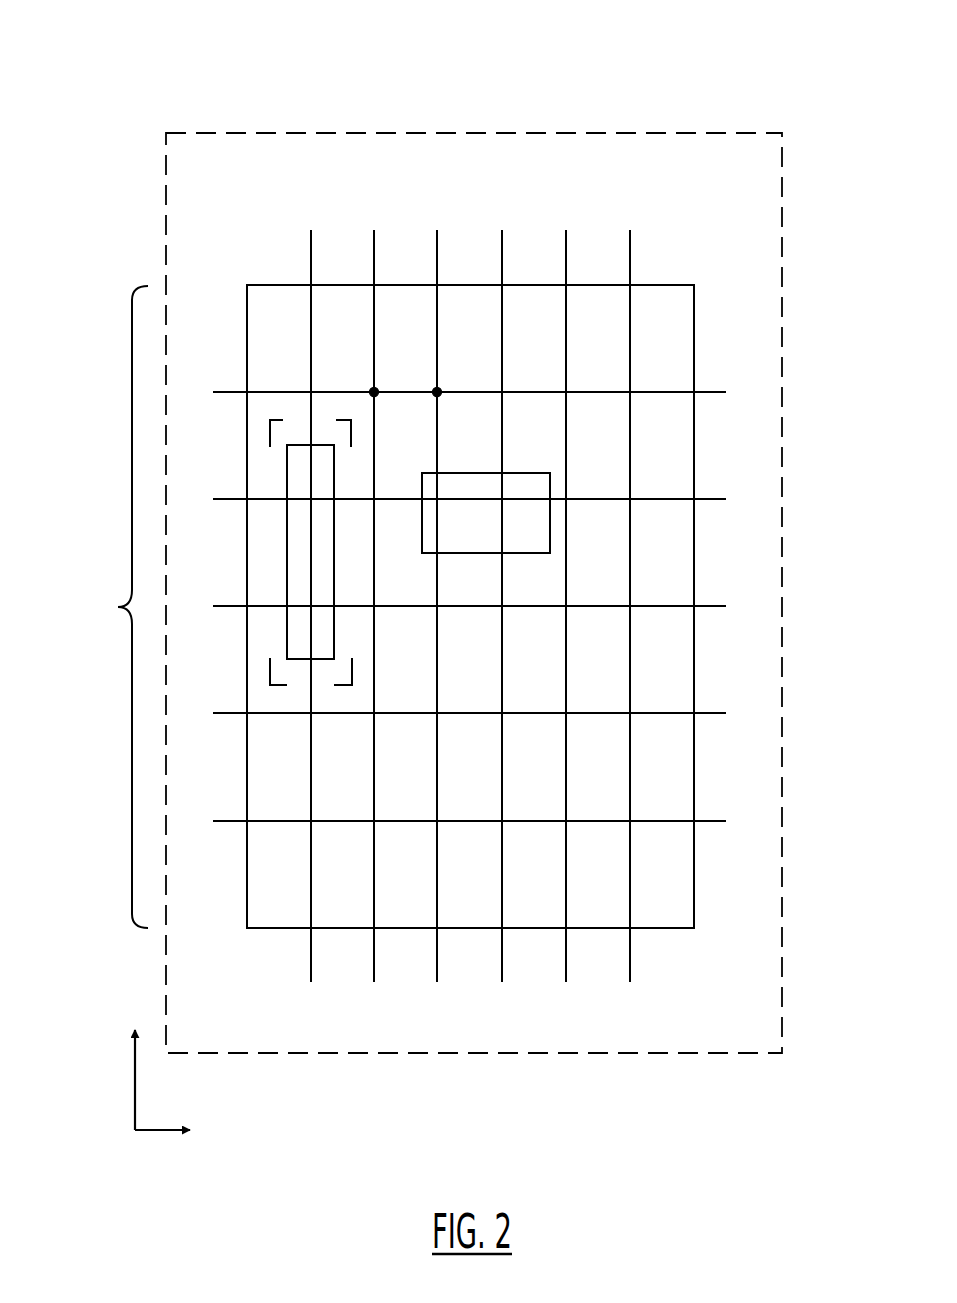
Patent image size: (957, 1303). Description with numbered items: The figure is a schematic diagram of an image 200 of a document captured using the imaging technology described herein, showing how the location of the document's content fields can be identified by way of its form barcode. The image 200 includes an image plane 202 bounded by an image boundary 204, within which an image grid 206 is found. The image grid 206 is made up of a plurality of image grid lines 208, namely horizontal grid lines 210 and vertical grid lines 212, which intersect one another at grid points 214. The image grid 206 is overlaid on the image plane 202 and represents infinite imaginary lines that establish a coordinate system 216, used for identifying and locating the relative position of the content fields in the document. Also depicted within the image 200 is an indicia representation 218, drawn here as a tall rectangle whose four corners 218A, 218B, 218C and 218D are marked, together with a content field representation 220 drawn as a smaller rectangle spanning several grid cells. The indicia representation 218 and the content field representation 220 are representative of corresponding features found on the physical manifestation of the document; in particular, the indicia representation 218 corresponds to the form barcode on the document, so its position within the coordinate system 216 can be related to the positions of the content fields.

The image 200 is at (802, 62).
The image plane 202 is at (786, 218).
The image boundary 204 is at (696, 333).
The image grid 206 is at (112, 607).
The image grid lines 208 is at (459, 577).
The horizontal grid lines 210 is at (230, 398).
The vertical grid lines 212 is at (312, 260).
The grid points 214 is at (436, 390).
The coordinate system 216 is at (120, 1105).
The indicia representation 218 is at (286, 550).
The corner 218A is at (283, 420).
The corner 218B is at (345, 420).
The corner 218C is at (278, 688).
The corner 218D is at (340, 688).
The content field representation 220 is at (463, 471).